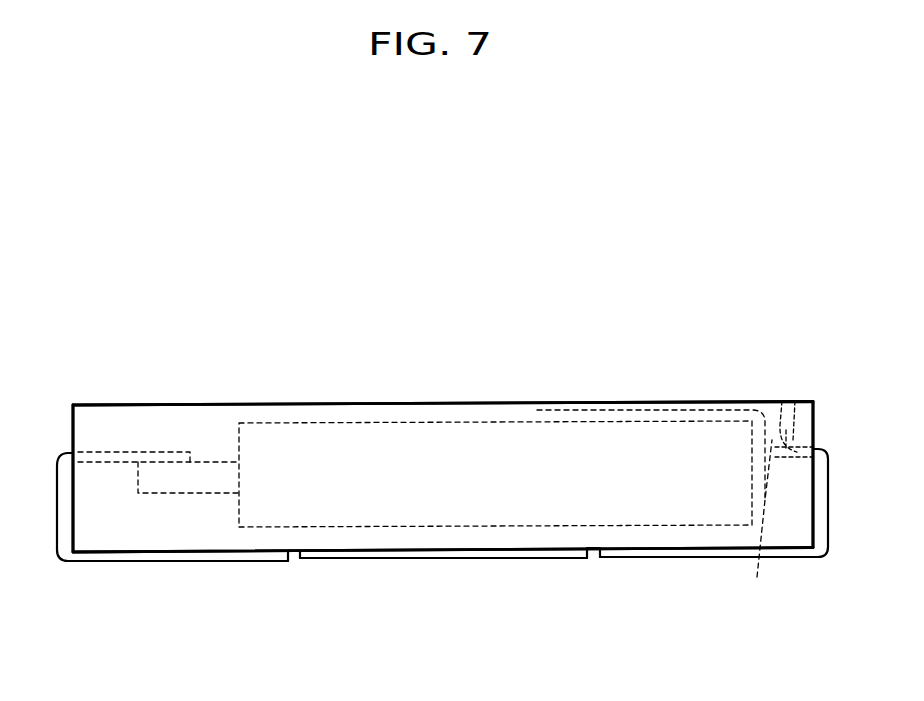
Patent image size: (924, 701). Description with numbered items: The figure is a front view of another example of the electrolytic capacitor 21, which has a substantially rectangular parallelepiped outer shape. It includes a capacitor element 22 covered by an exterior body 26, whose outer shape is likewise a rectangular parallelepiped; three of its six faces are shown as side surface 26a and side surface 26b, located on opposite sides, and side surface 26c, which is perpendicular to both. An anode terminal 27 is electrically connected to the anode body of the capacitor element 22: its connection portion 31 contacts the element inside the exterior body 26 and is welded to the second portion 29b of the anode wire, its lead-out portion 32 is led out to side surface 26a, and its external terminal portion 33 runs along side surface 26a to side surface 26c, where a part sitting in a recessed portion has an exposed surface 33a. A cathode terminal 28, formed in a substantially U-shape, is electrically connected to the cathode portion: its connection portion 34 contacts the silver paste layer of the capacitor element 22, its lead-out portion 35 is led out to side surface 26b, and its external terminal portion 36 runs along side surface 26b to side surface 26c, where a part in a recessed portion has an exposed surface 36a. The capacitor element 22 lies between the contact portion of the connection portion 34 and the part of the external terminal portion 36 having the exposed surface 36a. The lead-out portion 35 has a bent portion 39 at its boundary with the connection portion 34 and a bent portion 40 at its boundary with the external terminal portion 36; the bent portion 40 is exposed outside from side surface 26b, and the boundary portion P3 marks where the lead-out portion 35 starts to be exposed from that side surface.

The electrolytic capacitor 21 is at (707, 346).
The capacitor element 22 is at (336, 455).
The exterior body 26 is at (133, 425).
The side surface 26a is at (66, 436).
The side surface 26b is at (819, 407).
The side surface 26c is at (444, 567).
The anode terminal 27 is at (58, 526).
The cathode terminal 28 is at (828, 524).
The second portion of anode wire 29b is at (200, 475).
The connection portion 31 is at (157, 452).
The lead-out portion 32 is at (88, 440).
The external terminal portion 33 is at (108, 561).
The exposed surface 33a is at (180, 568).
The connection portion 34 is at (578, 405).
The lead-out portion 35 is at (782, 401).
The external terminal portion 36 is at (695, 558).
The exposed surface 36a is at (660, 563).
The bent portion 39 is at (759, 522).
The bent portion 40 is at (829, 470).
The boundary portion P3 is at (819, 446).